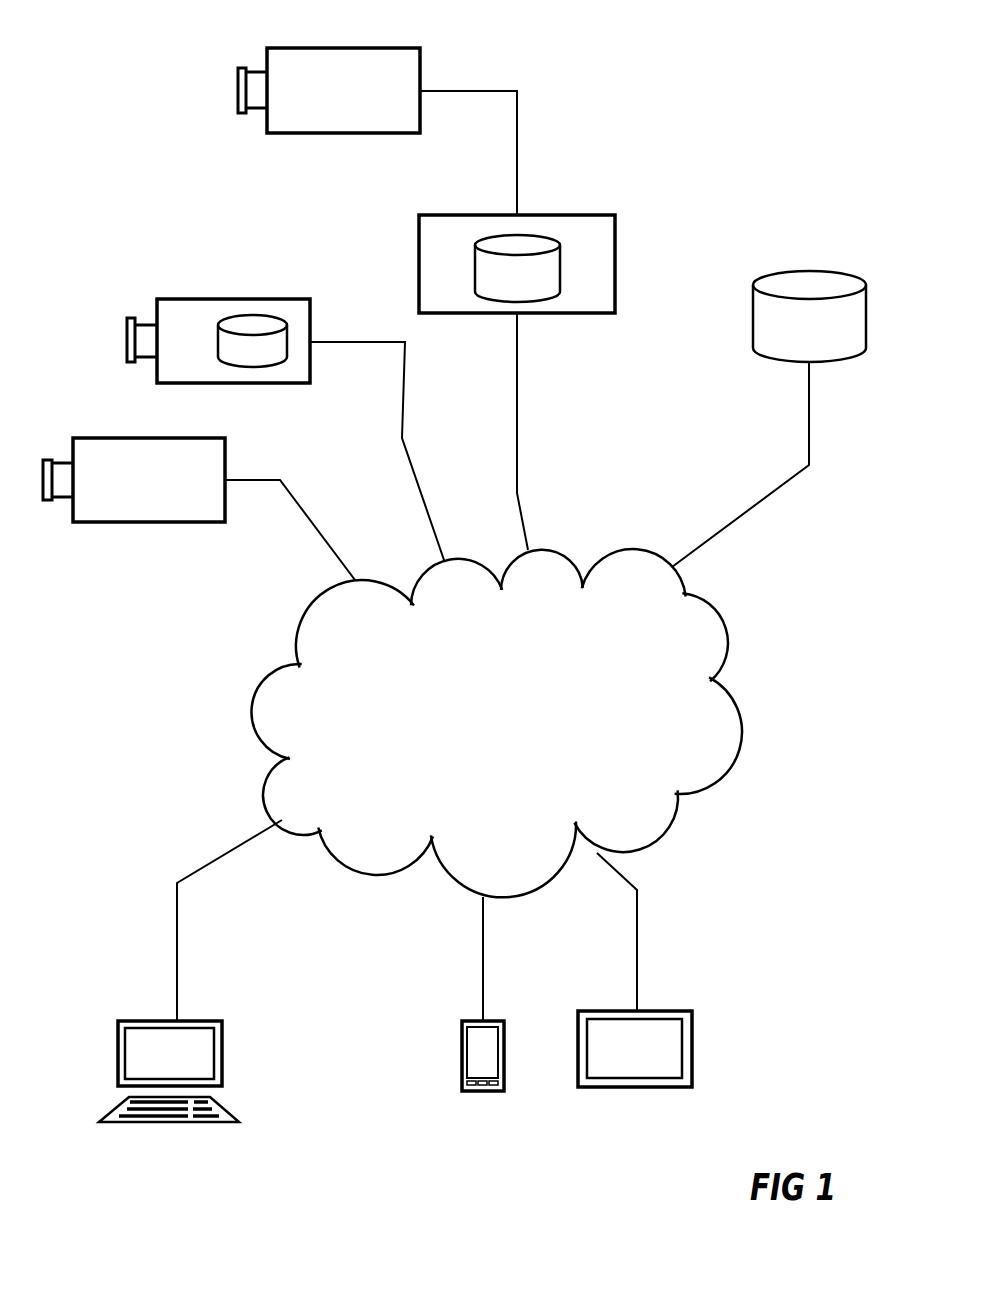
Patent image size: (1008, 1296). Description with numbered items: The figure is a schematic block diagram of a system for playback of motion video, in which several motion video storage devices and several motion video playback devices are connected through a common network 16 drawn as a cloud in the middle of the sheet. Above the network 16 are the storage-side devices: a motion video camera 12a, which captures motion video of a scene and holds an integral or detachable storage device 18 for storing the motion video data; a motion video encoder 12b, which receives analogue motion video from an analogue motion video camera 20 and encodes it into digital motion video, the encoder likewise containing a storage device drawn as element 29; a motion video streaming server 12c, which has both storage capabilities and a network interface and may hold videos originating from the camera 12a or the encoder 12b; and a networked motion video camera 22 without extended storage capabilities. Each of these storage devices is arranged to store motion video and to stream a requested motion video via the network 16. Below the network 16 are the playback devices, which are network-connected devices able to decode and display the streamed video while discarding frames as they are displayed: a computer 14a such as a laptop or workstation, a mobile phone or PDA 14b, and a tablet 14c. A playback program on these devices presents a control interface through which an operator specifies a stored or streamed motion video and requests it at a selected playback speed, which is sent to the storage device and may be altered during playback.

The analogue motion video camera 20 is at (405, 63).
The motion video camera 12a is at (179, 302).
The motion video encoder 12b is at (430, 262).
The motion video streaming server 12c is at (773, 286).
The storage device 18 is at (253, 318).
The storage memory 29 is at (490, 246).
The networked motion video camera 22 is at (210, 462).
The network 16 is at (492, 728).
The computer 14a is at (155, 1040).
The mobile phone or PDA 14b is at (473, 1048).
The tablet 14c is at (601, 1027).